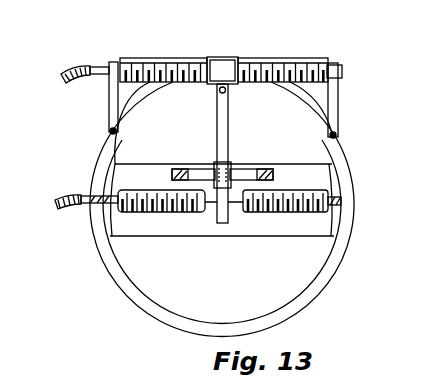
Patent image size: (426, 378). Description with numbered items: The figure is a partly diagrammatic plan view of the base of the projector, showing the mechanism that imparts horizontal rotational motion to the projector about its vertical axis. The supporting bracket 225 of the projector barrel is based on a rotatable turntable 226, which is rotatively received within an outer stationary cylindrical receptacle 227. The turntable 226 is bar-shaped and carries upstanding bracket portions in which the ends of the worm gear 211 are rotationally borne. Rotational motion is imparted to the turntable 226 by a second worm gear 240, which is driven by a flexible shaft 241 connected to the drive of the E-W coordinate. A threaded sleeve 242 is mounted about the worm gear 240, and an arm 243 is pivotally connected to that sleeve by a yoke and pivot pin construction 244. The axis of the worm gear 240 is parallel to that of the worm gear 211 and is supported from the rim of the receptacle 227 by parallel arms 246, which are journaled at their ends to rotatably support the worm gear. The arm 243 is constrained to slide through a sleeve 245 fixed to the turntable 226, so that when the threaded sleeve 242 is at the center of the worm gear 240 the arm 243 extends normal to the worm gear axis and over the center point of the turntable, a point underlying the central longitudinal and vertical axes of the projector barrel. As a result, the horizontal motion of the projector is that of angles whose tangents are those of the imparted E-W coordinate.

The worm gear 211 is at (162, 211).
The supporting bracket 225 is at (268, 170).
The turntable 226 is at (209, 237).
The cylindrical receptacle 227 is at (338, 150).
The worm gear 240 is at (287, 64).
The flexible shaft 241 is at (91, 66).
The threaded sleeve 242 is at (220, 57).
The arm 243 is at (229, 111).
The yoke and pivot pin construction 244 is at (218, 93).
The sleeve 245 is at (231, 164).
The parallel arms 246 is at (109, 104).